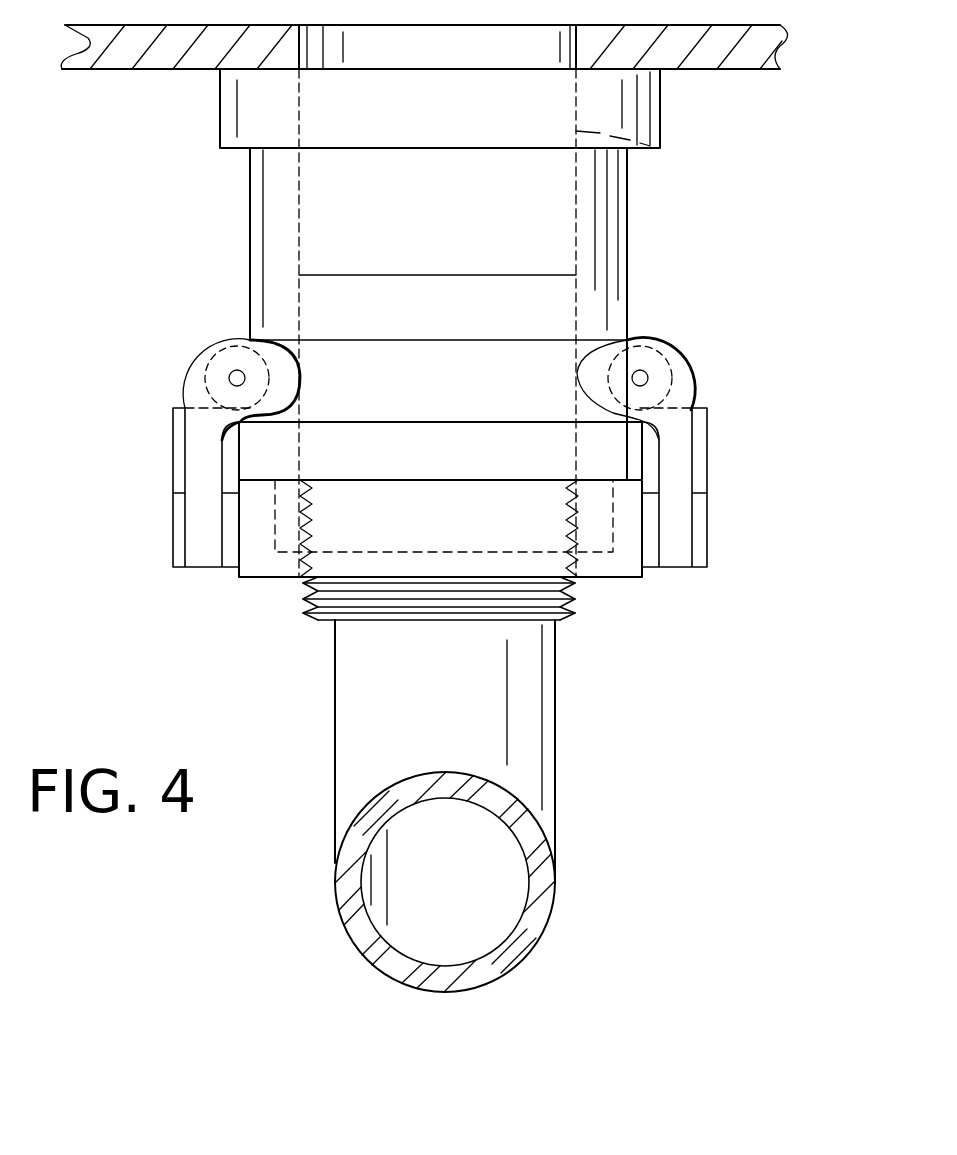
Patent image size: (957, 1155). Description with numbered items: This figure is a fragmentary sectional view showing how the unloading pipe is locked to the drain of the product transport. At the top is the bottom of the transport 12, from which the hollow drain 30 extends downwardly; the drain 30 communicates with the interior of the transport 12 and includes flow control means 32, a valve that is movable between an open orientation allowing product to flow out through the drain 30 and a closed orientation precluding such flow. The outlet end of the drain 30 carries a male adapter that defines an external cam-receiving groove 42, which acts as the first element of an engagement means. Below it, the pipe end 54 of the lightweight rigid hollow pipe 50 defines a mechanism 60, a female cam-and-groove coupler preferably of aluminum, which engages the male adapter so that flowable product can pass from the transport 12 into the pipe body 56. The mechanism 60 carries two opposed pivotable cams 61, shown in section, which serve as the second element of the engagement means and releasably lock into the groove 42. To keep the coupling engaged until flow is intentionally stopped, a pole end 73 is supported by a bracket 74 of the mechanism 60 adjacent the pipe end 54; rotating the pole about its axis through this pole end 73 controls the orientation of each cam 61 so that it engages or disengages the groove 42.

The transport 12 is at (150, 72).
The flow control means 32 is at (658, 154).
The drain 30 is at (628, 243).
The cam-receiving groove 42 is at (305, 385).
The pole end 73 is at (205, 365).
The bracket 74 is at (172, 510).
The pivotable cam 61 is at (203, 535).
The mechanism 60 is at (592, 533).
The pipe end 54 is at (562, 632).
The pipe body 56 is at (523, 760).
The pipe 50 is at (533, 930).